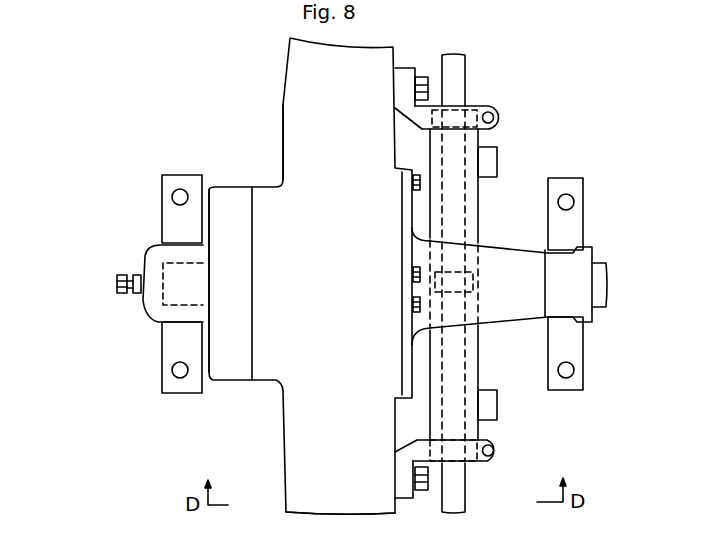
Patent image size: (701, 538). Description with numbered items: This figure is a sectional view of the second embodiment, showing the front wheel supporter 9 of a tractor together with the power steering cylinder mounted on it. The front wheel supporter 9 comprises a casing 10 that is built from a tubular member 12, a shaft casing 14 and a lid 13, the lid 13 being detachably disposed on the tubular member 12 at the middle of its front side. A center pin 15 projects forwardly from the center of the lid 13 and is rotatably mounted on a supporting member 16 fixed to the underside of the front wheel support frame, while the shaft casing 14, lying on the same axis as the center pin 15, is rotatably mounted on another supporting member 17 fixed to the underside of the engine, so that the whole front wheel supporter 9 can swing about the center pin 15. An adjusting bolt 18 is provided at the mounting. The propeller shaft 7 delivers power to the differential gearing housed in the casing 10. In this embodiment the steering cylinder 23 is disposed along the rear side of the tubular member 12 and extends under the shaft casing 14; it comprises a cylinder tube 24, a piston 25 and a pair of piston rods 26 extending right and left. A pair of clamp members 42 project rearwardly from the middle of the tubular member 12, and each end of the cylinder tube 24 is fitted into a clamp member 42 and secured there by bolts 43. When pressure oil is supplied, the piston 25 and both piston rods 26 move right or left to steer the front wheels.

The propeller shaft 7 is at (600, 288).
The front wheel supporter 9 is at (280, 98).
The casing 10 is at (274, 432).
The tubular member 12 is at (292, 153).
The lid 13 is at (232, 368).
The shaft casing 14 is at (515, 308).
The center pin 15 is at (170, 307).
The supporting member 16 is at (168, 388).
The supporting member 17 is at (552, 360).
The adjusting bolt 18 is at (116, 284).
The steering cylinder 23 is at (488, 205).
The cylinder tube 24 is at (478, 237).
The piston 25 is at (473, 287).
The piston rods 26 is at (457, 83).
The clamp members 42 is at (415, 110).
The bolts 43 is at (498, 118).